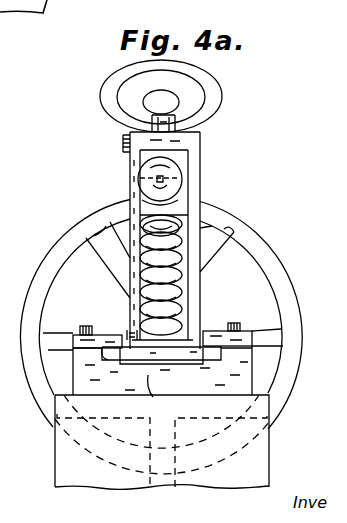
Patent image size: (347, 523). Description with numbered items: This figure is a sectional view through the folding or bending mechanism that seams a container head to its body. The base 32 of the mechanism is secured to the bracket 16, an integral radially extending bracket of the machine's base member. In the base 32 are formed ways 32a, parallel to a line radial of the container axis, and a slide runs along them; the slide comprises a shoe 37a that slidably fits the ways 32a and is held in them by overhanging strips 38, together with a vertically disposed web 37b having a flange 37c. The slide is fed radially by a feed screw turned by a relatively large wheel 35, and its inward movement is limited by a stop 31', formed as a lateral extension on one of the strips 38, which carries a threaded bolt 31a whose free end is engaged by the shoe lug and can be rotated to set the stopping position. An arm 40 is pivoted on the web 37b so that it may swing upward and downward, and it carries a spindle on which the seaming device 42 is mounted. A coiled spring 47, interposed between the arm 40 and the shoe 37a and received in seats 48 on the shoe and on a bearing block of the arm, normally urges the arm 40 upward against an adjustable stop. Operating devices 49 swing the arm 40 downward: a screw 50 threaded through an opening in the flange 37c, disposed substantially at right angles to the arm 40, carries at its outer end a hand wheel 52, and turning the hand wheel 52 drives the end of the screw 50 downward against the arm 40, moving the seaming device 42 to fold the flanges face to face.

The bracket 16 is at (87, 478).
The bolt 31a is at (127, 328).
The stop 31' is at (145, 335).
The base 32 is at (162, 370).
The ways 32a is at (102, 348).
The wheel 35 is at (268, 253).
The shoe 37a is at (182, 358).
The web 37b is at (196, 196).
The flange 37c is at (168, 134).
The overhanging strips 38 is at (97, 334).
The arm 40 is at (172, 228).
The seaming device 42 is at (166, 181).
The coiled spring 47 is at (172, 277).
The seats 48 is at (161, 395).
The operating devices 49 is at (180, 97).
The screw 50 is at (176, 110).
The hand wheel 52 is at (204, 84).